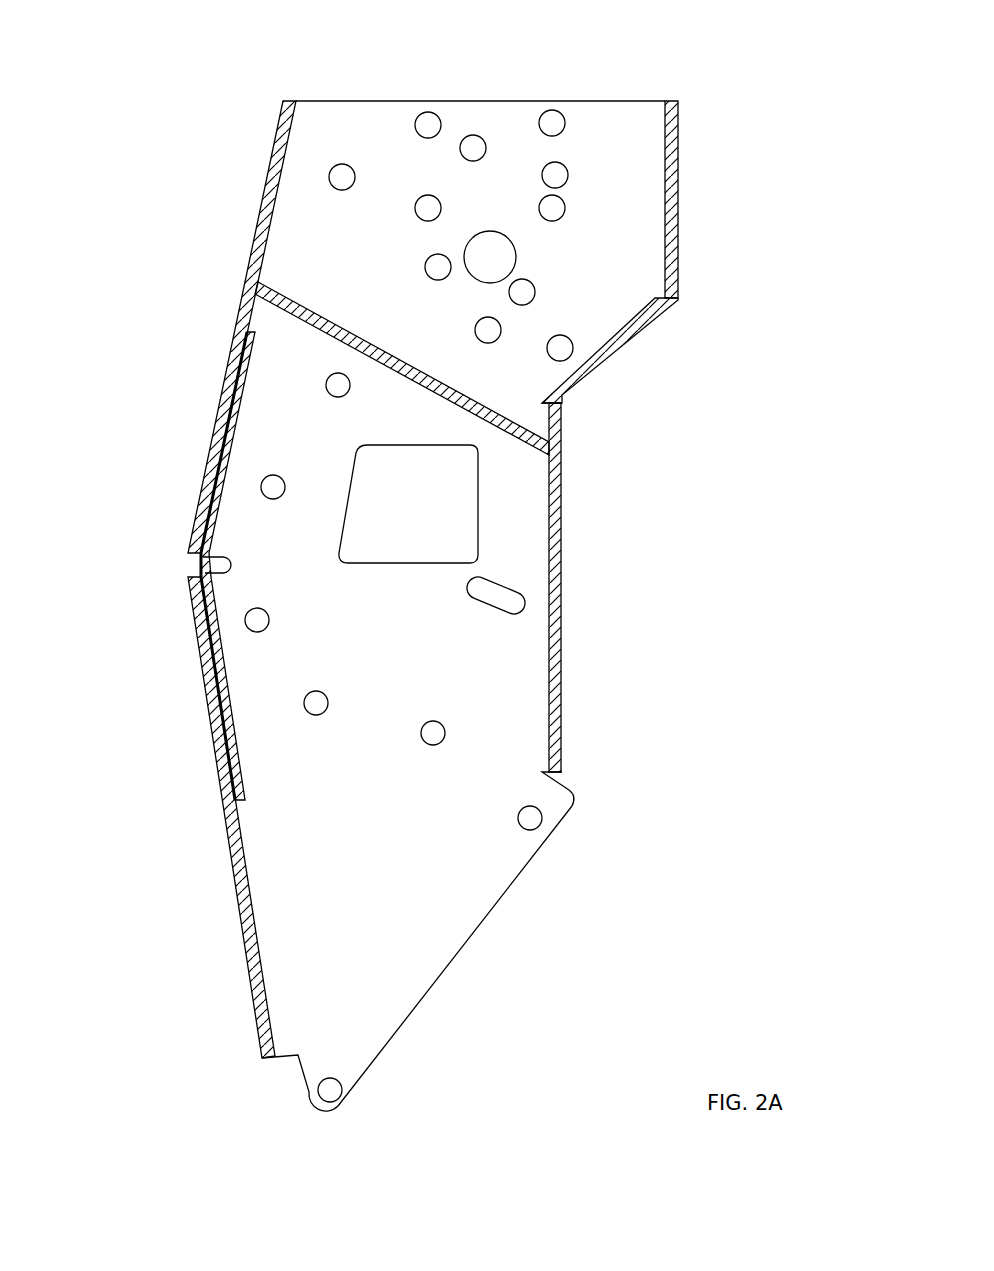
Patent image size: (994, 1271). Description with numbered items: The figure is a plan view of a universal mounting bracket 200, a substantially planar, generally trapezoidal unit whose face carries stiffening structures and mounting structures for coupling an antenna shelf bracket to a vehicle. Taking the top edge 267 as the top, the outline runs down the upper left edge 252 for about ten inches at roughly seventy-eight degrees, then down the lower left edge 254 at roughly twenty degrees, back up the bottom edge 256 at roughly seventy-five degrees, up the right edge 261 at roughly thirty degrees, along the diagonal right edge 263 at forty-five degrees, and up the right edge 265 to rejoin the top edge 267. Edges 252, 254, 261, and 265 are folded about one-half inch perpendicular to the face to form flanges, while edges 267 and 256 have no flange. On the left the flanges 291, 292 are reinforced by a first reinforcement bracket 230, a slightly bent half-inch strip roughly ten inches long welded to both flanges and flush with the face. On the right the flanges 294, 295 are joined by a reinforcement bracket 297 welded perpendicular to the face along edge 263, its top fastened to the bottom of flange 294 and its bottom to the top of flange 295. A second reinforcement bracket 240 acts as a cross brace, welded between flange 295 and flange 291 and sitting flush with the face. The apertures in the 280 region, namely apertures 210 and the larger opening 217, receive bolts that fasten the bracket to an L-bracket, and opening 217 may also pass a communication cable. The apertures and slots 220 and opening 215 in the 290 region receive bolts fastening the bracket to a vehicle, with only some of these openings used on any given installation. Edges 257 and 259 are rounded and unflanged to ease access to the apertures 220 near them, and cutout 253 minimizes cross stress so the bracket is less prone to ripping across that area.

The universal mounting bracket 200 is at (171, 83).
The apertures 210 is at (501, 330).
The opening 215 is at (414, 565).
The opening 217 is at (470, 280).
The apertures and slots 220 is at (526, 598).
The first reinforcement bracket 230 is at (225, 657).
The second reinforcement bracket 240 is at (331, 322).
The left edge 252 is at (234, 327).
The cutout 253 is at (186, 562).
The left edge 254 is at (206, 817).
The bottom edge 256 is at (467, 940).
The edge 257 is at (294, 1079).
The edge 259 is at (576, 782).
The right edge 261 is at (637, 587).
The right edge 263 is at (639, 350).
The right edge 265 is at (728, 199).
The top edge 267 is at (637, 92).
The region 280 is at (728, 199).
The region 290 is at (637, 587).
The flange 291 is at (249, 260).
The flange 292 is at (252, 990).
The flange 294 is at (679, 268).
The flange 295 is at (562, 683).
The reinforcement bracket 297 is at (625, 343).